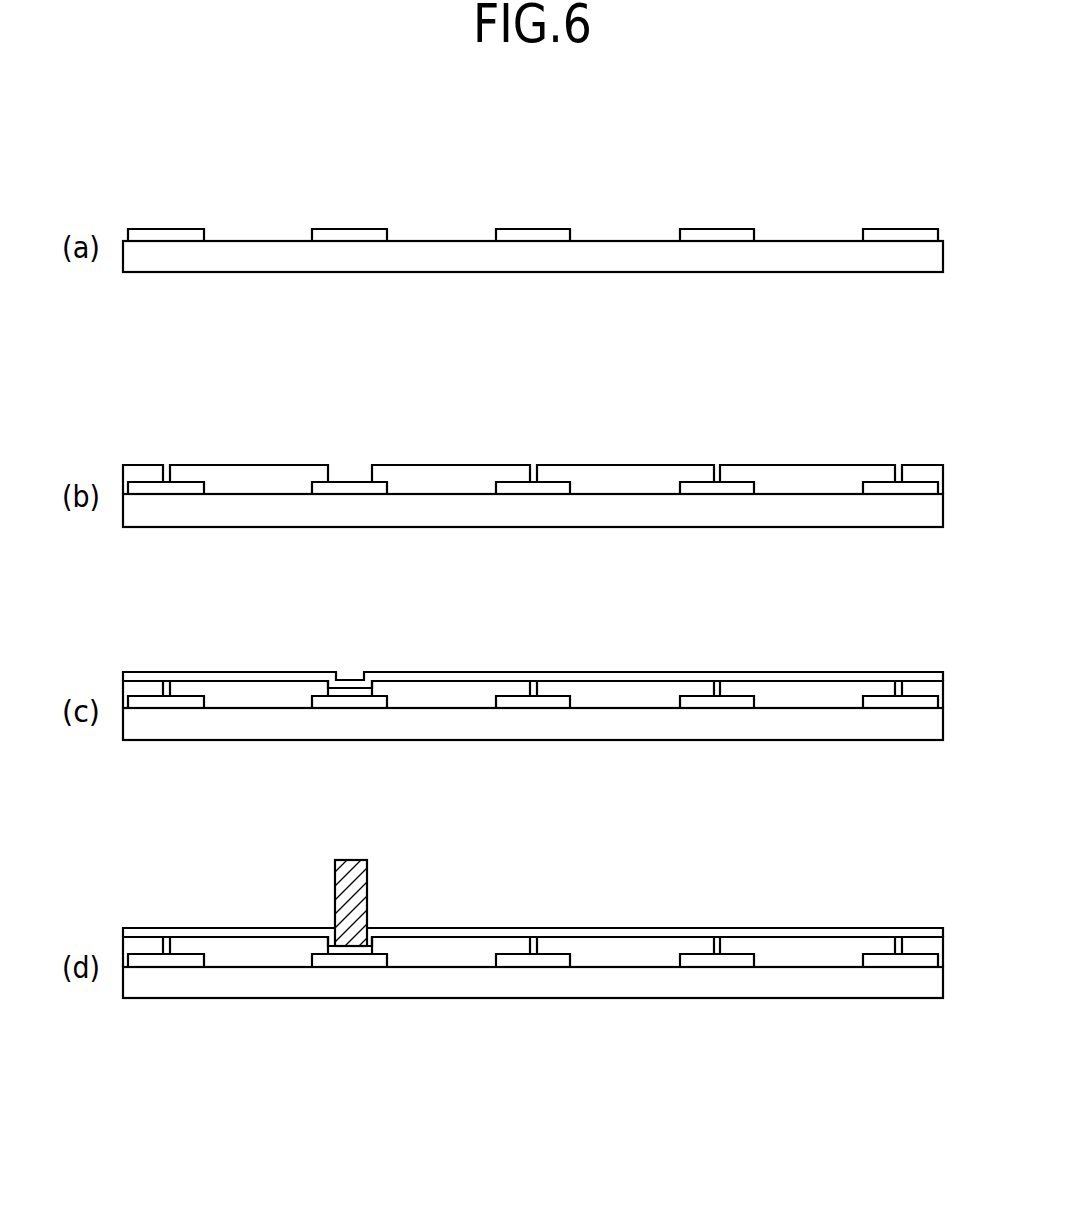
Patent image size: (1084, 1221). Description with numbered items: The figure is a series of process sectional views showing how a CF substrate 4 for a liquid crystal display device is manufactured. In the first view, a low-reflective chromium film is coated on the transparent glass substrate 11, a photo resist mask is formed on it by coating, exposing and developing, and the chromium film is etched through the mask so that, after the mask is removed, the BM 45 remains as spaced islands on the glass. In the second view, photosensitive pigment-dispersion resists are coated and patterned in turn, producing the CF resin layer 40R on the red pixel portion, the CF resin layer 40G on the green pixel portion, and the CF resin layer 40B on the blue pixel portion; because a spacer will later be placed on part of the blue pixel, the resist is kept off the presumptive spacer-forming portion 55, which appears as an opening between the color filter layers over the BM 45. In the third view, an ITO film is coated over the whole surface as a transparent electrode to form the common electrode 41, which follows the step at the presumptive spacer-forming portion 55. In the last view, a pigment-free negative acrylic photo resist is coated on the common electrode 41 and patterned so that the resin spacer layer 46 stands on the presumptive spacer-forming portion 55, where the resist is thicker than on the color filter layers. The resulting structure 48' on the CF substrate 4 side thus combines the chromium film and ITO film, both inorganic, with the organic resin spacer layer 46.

The transparent glass substrate 11 is at (865, 260).
The BM 45 is at (545, 228).
The CF resin layer 40B is at (263, 473).
The CF resin layer 40R is at (440, 473).
The CF resin layer 40G is at (622, 473).
The presumptive spacer-forming portion 55 is at (352, 466).
The common electrode 41 is at (398, 676).
The resin spacer layer 46 is at (355, 893).
The structure 48' is at (314, 818).
The CF substrate 4 is at (807, 1032).